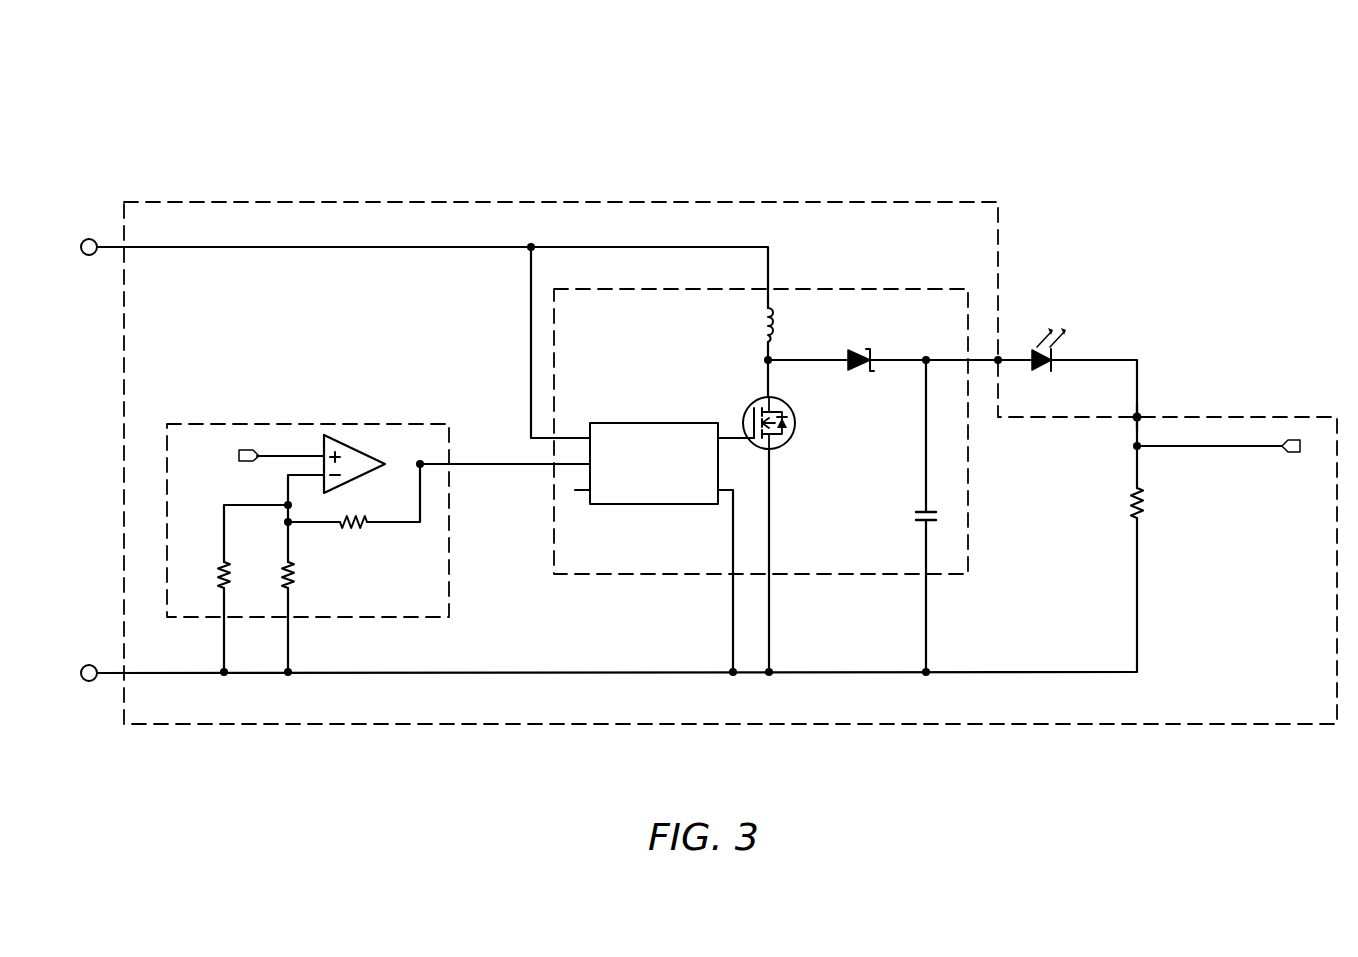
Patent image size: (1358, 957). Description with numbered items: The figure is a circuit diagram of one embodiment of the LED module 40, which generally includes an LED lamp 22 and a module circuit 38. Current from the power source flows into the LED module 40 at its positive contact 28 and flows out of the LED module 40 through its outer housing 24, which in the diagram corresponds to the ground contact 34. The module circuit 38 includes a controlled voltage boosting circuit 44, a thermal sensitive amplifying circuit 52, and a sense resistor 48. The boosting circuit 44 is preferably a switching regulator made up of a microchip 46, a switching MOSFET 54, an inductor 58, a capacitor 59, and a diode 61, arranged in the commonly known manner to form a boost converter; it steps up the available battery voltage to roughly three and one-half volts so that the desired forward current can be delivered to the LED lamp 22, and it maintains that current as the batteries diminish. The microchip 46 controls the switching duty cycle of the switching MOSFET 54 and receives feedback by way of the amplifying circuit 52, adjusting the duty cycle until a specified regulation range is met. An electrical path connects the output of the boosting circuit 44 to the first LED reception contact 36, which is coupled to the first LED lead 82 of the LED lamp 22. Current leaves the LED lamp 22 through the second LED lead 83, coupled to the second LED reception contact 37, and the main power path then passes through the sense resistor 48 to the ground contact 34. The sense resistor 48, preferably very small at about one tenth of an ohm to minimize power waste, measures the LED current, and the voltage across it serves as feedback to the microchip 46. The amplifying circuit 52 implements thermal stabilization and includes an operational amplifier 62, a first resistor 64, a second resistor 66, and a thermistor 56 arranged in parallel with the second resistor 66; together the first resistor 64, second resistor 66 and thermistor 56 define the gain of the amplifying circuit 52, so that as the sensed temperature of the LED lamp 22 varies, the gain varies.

The LED module 40 is at (1048, 128).
The module circuit 38 is at (395, 201).
The positive contact 28 is at (88, 238).
The outer housing 24 is at (92, 715).
The ground contact 34 is at (92, 683).
The controlled voltage boosting circuit 44 is at (640, 288).
The microchip 46 is at (648, 422).
The inductor 58 is at (764, 322).
The switching MOSFET 54 is at (792, 437).
The diode 61 is at (858, 350).
The capacitor 59 is at (940, 515).
The thermal sensitive amplifying circuit 52 is at (224, 422).
The operational amplifier 62 is at (347, 440).
The thermistor 56 is at (222, 566).
The second resistor 66 is at (296, 573).
The first resistor 64 is at (360, 529).
The LED lamp 22 is at (1042, 366).
The first LED reception contact 36 is at (1065, 315).
The first LED lead 82 is at (1000, 355).
The second LED reception contact 37 is at (1208, 380).
The second LED lead 83 is at (1140, 410).
The sense resistor 48 is at (1144, 508).